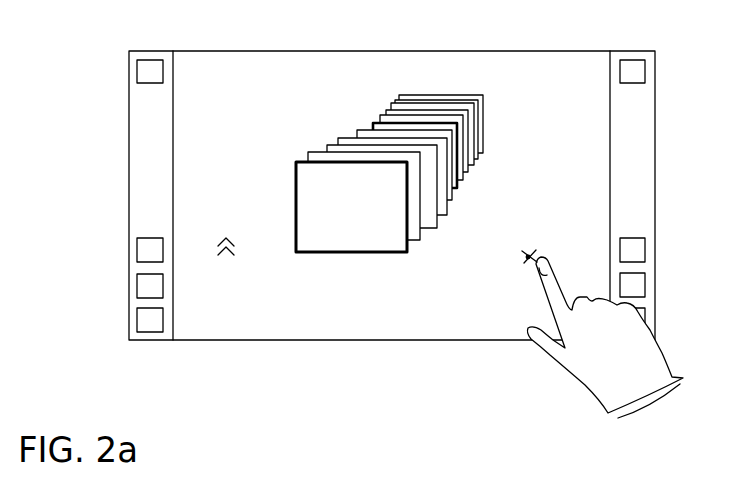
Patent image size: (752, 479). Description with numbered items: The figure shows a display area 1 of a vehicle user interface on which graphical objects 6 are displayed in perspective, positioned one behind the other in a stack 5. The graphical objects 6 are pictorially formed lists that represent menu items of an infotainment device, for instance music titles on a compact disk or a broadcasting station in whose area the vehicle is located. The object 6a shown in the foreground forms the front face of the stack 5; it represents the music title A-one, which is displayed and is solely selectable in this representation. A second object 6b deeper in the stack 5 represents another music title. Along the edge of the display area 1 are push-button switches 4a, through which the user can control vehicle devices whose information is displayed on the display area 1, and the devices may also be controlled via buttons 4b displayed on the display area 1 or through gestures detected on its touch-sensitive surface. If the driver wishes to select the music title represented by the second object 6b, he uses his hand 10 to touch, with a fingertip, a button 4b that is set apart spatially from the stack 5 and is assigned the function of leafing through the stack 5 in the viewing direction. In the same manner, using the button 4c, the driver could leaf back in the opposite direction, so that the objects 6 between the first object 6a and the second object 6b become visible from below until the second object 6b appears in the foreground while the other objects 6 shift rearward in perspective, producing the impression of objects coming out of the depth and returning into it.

The display area 1 is at (237, 68).
The push-button switches 4a is at (632, 285).
The buttons 4b is at (528, 257).
The button 4c is at (226, 258).
The stack 5 is at (301, 134).
The graphical objects 6 is at (257, 181).
The object 6a is at (305, 203).
The second object 6b is at (382, 125).
The hand 10 is at (632, 353).